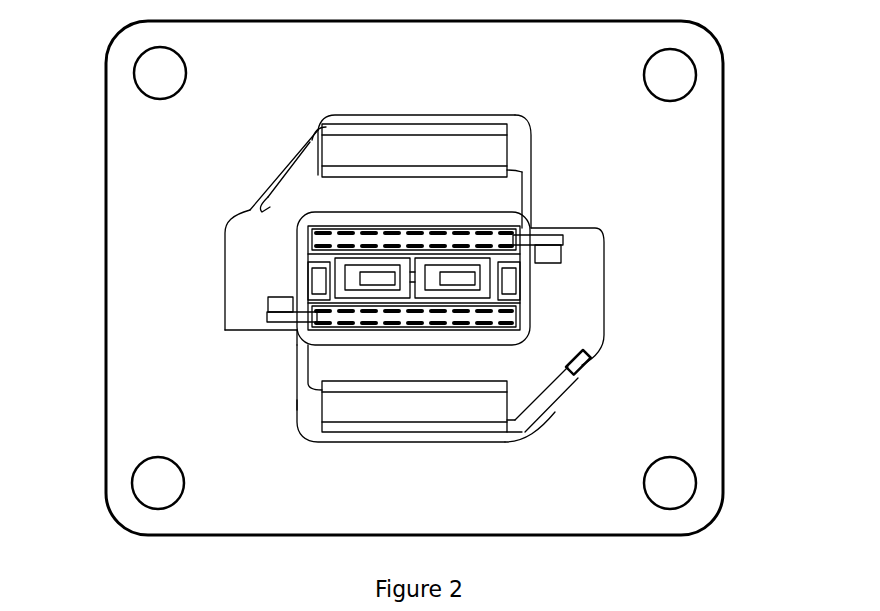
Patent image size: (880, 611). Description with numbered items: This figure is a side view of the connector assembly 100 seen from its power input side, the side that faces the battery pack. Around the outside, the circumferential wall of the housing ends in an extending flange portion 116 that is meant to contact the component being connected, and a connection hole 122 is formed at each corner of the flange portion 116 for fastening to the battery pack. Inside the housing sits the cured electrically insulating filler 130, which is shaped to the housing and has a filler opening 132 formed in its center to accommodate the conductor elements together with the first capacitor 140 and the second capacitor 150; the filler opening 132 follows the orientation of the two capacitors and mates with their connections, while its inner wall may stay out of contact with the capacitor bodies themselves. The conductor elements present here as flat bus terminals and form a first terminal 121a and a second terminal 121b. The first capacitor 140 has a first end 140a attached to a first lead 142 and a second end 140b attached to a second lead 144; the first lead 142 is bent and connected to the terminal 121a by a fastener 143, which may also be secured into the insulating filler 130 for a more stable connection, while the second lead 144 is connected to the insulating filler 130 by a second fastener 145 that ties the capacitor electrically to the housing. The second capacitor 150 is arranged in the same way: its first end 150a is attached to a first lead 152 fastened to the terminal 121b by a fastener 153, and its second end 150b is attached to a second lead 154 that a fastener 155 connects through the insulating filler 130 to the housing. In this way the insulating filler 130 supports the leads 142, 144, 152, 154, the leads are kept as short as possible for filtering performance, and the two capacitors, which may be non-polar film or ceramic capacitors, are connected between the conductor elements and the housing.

The connector assembly 100 is at (471, 278).
The flange portion 116 is at (720, 396).
The connection hole 122 is at (160, 88).
The electrically insulating filler 130 is at (155, 330).
The filler opening 132 is at (422, 115).
The first capacitor 140 is at (432, 150).
The first end of the first capacitor 140a is at (532, 134).
The second end of the first capacitor 140b is at (320, 130).
The first lead 142 is at (530, 182).
The fastener 143 is at (561, 262).
The second lead 144 is at (293, 147).
The second fastener 145 is at (245, 207).
The first side terminal 121a is at (563, 237).
The first side terminal 121b is at (268, 317).
The first lead 152 is at (296, 345).
The fastener 153 is at (280, 297).
The second capacitor 150 is at (432, 443).
The first end of the second capacitor 150a is at (320, 408).
The second end of the second capacitor 150b is at (525, 432).
The second lead 154 is at (565, 392).
The fastener 155 is at (583, 365).